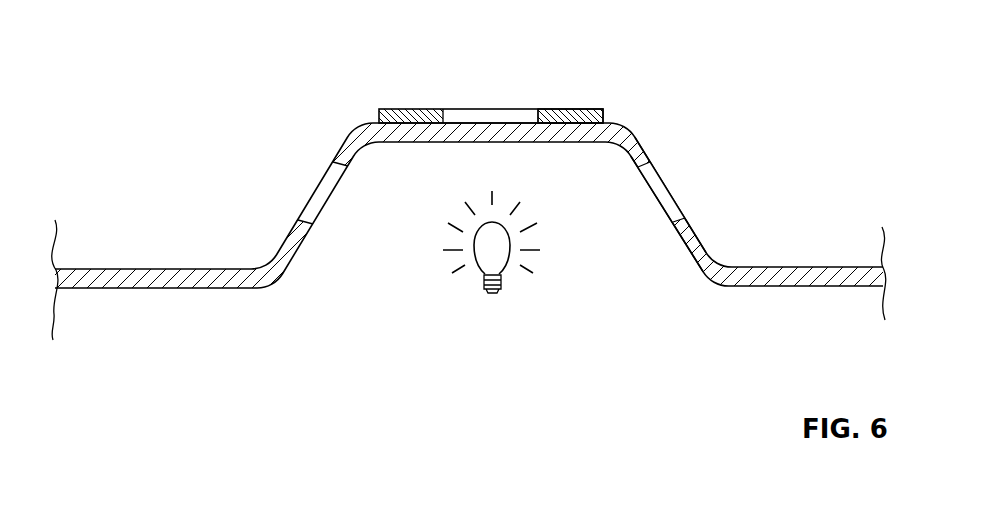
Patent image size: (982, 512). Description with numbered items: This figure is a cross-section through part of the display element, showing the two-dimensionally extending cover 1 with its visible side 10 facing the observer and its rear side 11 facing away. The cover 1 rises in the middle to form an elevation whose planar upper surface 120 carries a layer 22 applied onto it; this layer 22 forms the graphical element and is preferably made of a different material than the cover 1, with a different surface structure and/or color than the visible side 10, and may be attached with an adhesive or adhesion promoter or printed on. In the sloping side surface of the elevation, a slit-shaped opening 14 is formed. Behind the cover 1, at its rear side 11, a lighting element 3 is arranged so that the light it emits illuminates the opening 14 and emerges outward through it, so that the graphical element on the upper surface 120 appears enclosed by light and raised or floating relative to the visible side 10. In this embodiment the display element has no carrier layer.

The cover 1 is at (491, 235).
The visible side 10 is at (491, 235).
The rear side 11 is at (163, 288).
The opening 14 is at (670, 193).
The layer 22 is at (492, 76).
The upper surface 120 is at (558, 109).
The lighting element 3 is at (490, 252).